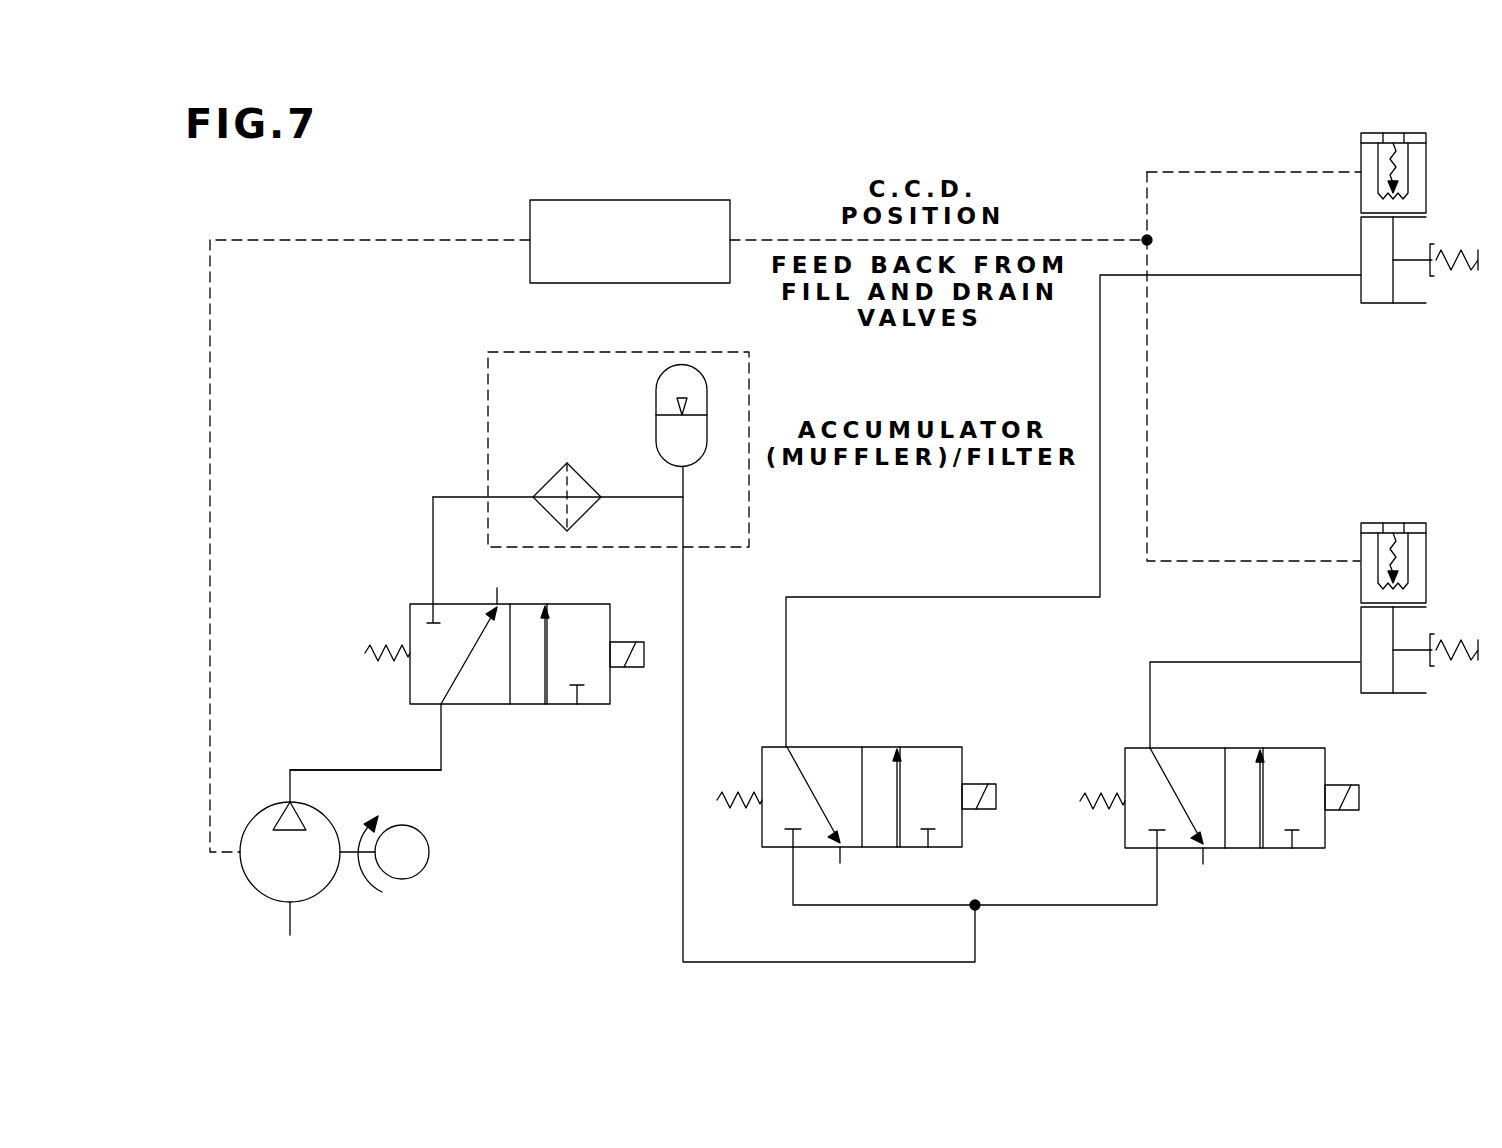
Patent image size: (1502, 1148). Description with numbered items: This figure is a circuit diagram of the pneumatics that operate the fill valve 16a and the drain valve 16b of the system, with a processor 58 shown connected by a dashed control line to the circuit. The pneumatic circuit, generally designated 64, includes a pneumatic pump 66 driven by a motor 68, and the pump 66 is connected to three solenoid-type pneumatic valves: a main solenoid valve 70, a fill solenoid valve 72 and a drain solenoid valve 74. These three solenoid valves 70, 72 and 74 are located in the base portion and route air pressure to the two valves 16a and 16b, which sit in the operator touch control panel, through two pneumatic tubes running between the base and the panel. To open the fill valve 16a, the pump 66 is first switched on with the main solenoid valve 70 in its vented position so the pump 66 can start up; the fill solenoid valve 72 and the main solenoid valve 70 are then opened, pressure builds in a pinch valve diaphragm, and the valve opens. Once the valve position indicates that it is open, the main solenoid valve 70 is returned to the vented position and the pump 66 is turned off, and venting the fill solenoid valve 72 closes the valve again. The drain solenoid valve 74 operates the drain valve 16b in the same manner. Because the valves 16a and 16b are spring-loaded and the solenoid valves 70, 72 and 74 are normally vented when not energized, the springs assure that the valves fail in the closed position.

The processor 58 is at (583, 200).
The pneumatic circuit 64 is at (428, 228).
The pneumatic pump 66 is at (258, 893).
The motor 68 is at (428, 835).
The main solenoid valve 70 is at (590, 704).
The fill solenoid valve 72 is at (945, 847).
The drain solenoid valve 74 is at (1310, 848).
The fill valve 16a is at (1361, 250).
The drain valve 16b is at (1361, 640).